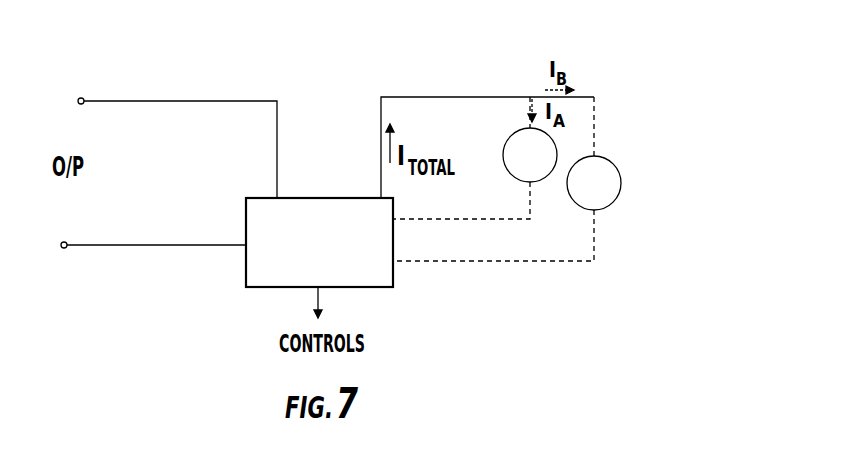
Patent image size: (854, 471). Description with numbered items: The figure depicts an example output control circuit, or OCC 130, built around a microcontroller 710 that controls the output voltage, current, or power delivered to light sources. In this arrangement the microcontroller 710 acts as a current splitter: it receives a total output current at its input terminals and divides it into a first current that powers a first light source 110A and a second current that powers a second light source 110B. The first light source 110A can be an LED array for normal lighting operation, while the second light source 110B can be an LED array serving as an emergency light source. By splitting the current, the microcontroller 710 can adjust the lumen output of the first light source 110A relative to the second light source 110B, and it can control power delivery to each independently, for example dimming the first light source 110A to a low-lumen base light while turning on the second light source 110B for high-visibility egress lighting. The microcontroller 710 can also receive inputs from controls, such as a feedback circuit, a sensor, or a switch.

The microcontroller 710 is at (354, 197).
The first light source 110A is at (550, 168).
The second light source 110B is at (613, 196).
The output control circuit 130 is at (636, 86).